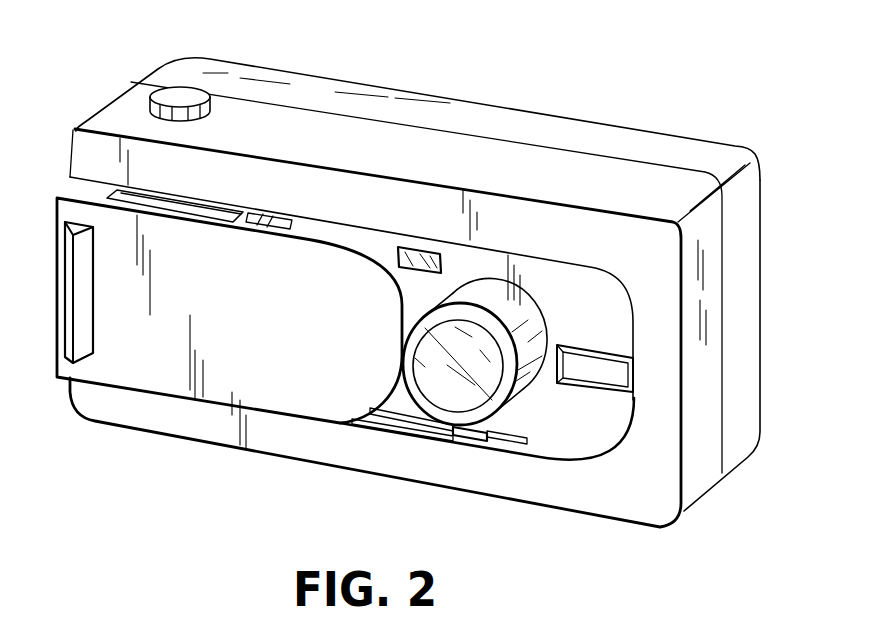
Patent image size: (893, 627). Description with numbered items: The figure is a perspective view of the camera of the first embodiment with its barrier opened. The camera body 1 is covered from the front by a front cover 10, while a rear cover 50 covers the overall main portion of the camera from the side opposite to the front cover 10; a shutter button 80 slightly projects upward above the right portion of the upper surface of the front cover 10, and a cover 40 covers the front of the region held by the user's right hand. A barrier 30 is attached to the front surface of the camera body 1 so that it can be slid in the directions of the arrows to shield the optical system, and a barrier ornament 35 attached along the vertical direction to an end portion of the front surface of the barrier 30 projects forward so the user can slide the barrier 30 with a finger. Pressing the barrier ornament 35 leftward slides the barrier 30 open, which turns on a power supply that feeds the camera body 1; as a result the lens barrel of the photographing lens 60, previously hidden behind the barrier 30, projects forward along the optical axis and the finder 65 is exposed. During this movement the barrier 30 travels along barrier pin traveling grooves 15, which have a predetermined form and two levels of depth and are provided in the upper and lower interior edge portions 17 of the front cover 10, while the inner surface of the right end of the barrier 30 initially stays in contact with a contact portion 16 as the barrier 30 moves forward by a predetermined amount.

The camera body 1 is at (772, 307).
The front cover 10 is at (717, 290).
The barrier pin traveling grooves 15 is at (467, 433).
The contact portion 16 is at (611, 373).
The interior edge portions 17 is at (567, 447).
The barrier 30 is at (333, 400).
The barrier ornament 35 is at (90, 300).
The cover 40 is at (214, 207).
The rear cover 50 is at (655, 143).
The photographing lens 60 is at (547, 327).
The finder 65 is at (413, 249).
The shutter button 80 is at (158, 100).